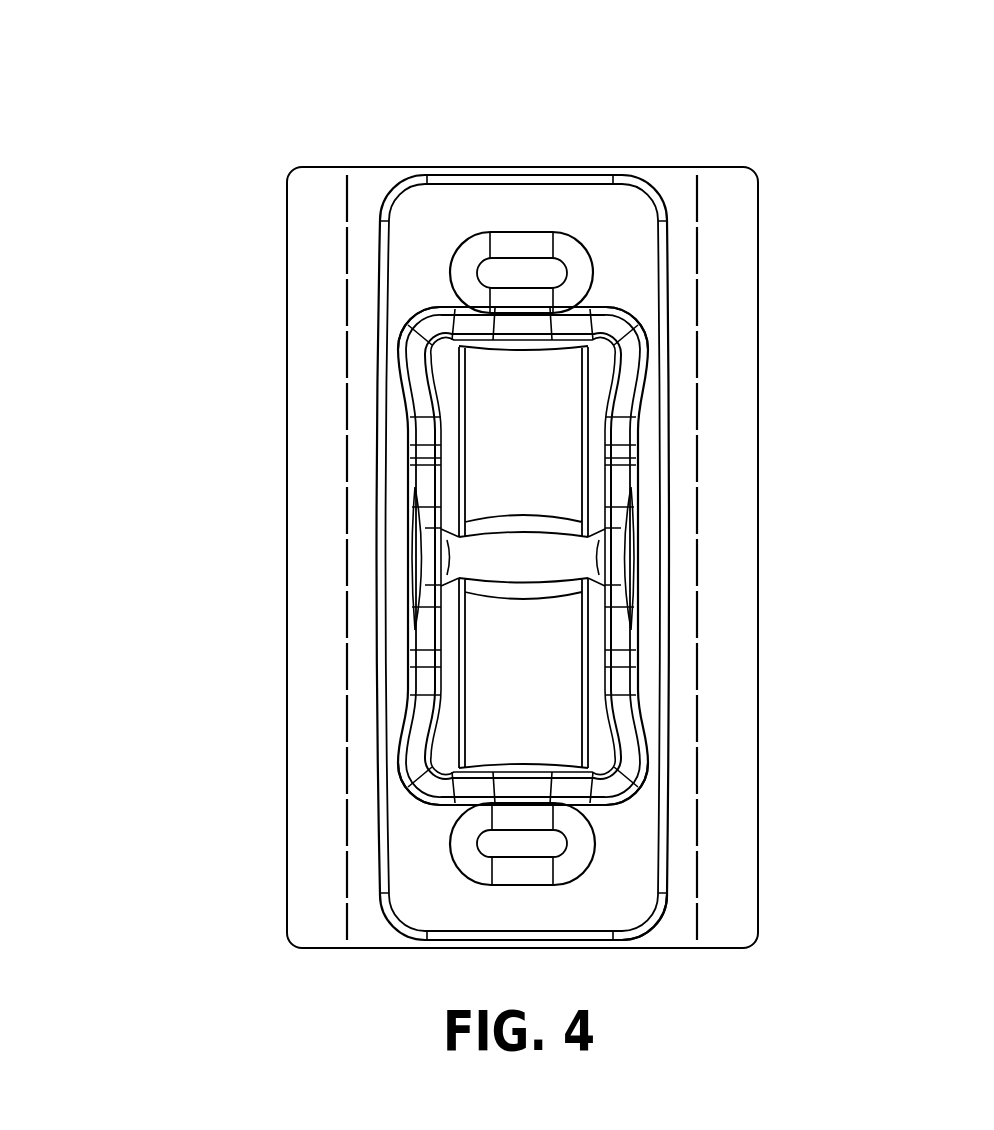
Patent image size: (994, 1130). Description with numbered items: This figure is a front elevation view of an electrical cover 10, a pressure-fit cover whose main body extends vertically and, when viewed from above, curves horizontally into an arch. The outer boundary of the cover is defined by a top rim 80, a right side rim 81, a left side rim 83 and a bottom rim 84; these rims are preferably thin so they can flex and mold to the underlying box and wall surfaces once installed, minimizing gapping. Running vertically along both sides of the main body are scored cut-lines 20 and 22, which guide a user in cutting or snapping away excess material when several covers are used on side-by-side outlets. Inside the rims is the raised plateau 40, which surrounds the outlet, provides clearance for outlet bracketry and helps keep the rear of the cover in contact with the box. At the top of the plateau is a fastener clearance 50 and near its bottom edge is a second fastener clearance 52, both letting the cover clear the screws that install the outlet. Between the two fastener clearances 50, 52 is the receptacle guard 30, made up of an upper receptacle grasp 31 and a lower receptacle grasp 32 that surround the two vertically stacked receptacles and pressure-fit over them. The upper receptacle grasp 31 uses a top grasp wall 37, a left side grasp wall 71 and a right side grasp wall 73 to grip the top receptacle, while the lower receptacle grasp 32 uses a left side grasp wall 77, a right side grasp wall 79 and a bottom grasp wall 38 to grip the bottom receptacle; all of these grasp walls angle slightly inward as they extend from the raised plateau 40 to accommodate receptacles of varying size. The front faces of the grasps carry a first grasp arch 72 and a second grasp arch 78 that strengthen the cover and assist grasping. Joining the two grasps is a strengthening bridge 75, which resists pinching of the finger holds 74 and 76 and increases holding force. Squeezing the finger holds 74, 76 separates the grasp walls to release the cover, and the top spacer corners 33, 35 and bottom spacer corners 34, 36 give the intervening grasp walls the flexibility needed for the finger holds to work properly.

The electrical cover 10 is at (773, 972).
The scored cut-line 20 is at (349, 140).
The scored cut-line 22 is at (699, 135).
The receptacle guard 30 is at (246, 341).
The upper receptacle grasp 31 is at (305, 423).
The lower receptacle grasp 32 is at (303, 690).
The top spacer corner 33 is at (398, 332).
The bottom spacer corner 34 is at (400, 788).
The top spacer corner 35 is at (648, 330).
The bottom spacer corner 36 is at (647, 788).
The top grasp wall 37 is at (520, 328).
The bottom grasp wall 38 is at (518, 787).
The raised plateau 40 is at (562, 178).
The fastener clearance 50 is at (512, 248).
The second fastener clearance 52 is at (538, 873).
The left side grasp wall 71 is at (391, 488).
The first grasp arch 72 is at (523, 441).
The right side grasp wall 73 is at (660, 478).
The finger hold 74 is at (391, 557).
The strengthening bridge 75 is at (523, 557).
The finger hold 76 is at (655, 557).
The left side grasp wall 77 is at (393, 635).
The second grasp arch 78 is at (523, 673).
The right side grasp wall 79 is at (655, 643).
The top rim 80 is at (735, 165).
The right side rim 81 is at (753, 385).
The left side rim 83 is at (286, 240).
The bottom rim 84 is at (657, 937).